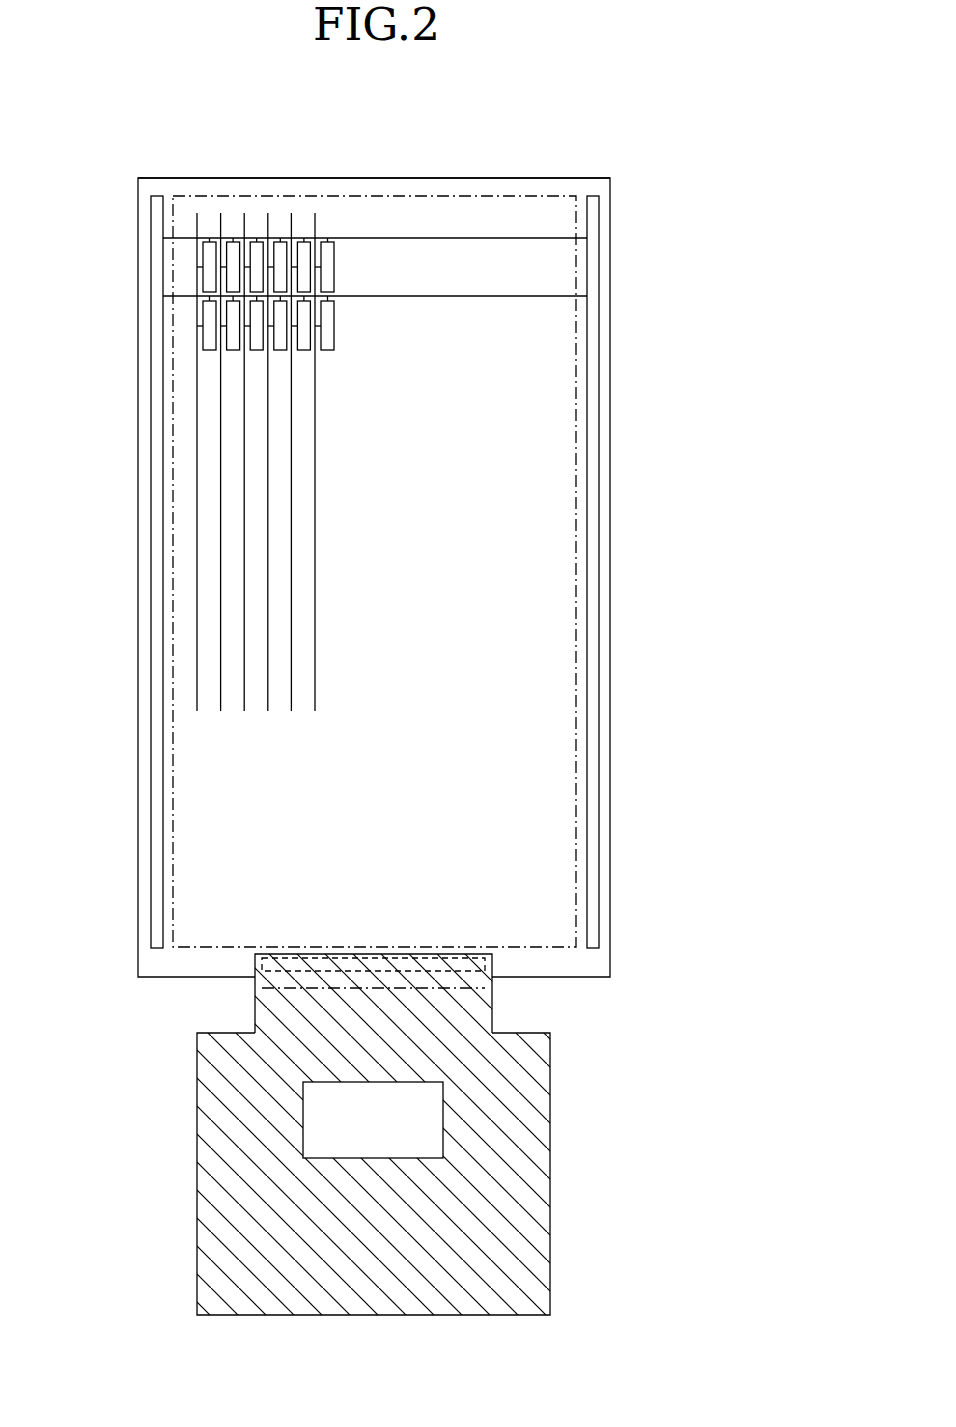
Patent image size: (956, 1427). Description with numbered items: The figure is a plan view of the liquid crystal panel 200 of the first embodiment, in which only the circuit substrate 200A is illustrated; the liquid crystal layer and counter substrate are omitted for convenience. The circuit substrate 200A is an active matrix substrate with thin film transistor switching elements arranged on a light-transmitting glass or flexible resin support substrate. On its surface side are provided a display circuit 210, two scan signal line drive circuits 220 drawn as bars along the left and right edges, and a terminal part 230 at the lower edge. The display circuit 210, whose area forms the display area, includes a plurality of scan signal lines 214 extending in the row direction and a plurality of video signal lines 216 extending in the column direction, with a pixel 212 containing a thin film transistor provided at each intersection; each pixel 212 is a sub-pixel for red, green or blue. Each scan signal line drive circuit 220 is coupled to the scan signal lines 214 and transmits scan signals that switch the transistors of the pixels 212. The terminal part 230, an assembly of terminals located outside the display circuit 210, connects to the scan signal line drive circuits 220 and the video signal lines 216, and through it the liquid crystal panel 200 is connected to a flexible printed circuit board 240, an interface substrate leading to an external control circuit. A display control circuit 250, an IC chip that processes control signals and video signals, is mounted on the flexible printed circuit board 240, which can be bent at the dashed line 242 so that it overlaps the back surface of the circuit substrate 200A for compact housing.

The liquid crystal panel 200 is at (556, 143).
The circuit substrate 200A is at (304, 178).
The display circuit 210 is at (458, 196).
The scan signal line drive circuit 220 is at (155, 334).
The pixel 212 is at (327, 268).
The scan signal line 214 is at (470, 298).
The video signal line 216 is at (318, 474).
The terminal part 230 is at (447, 963).
The flexible printed circuit board 240 is at (538, 1165).
The dashed line 242 is at (293, 988).
The display control circuit 250 is at (430, 1116).